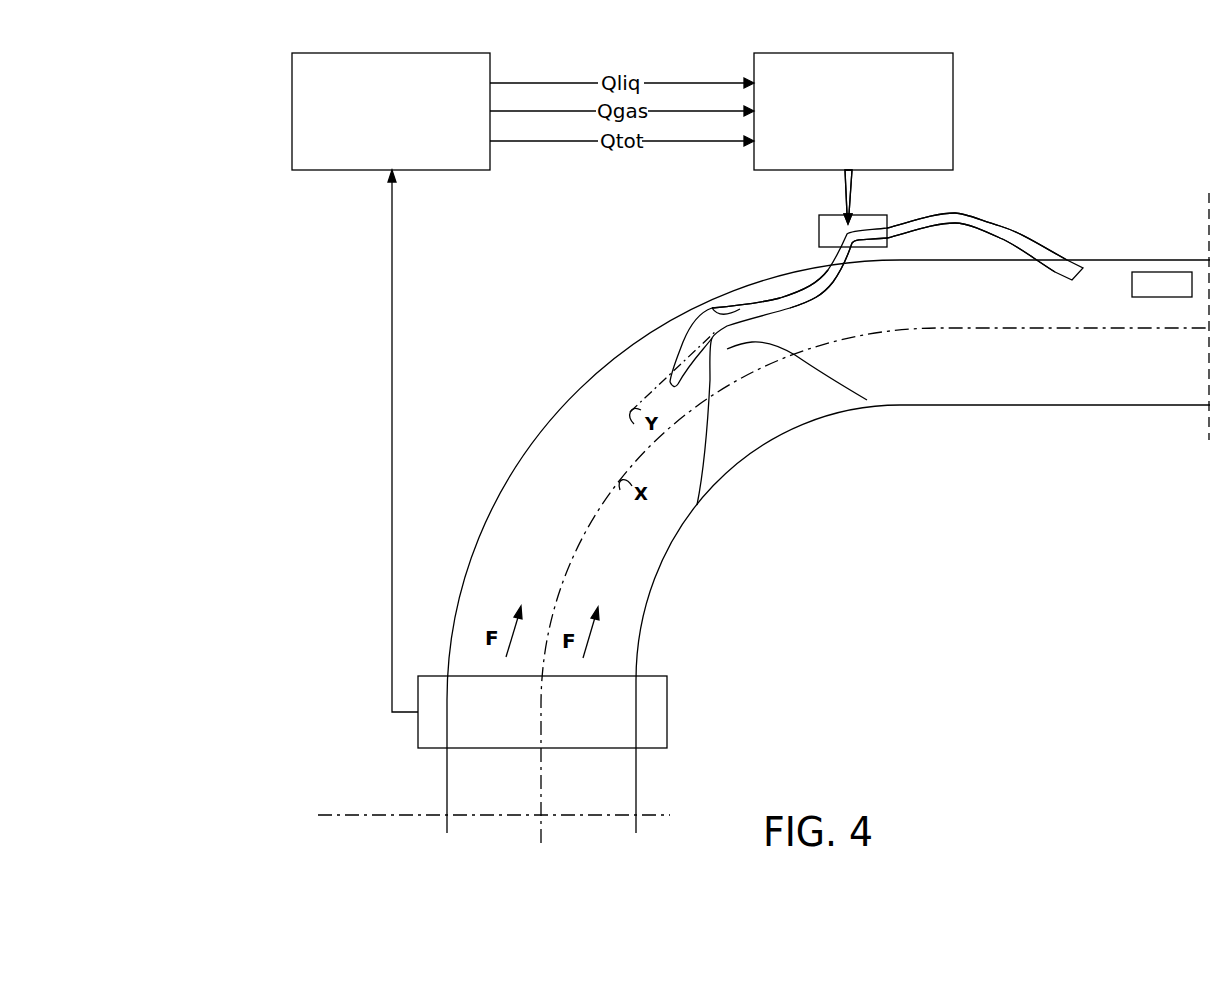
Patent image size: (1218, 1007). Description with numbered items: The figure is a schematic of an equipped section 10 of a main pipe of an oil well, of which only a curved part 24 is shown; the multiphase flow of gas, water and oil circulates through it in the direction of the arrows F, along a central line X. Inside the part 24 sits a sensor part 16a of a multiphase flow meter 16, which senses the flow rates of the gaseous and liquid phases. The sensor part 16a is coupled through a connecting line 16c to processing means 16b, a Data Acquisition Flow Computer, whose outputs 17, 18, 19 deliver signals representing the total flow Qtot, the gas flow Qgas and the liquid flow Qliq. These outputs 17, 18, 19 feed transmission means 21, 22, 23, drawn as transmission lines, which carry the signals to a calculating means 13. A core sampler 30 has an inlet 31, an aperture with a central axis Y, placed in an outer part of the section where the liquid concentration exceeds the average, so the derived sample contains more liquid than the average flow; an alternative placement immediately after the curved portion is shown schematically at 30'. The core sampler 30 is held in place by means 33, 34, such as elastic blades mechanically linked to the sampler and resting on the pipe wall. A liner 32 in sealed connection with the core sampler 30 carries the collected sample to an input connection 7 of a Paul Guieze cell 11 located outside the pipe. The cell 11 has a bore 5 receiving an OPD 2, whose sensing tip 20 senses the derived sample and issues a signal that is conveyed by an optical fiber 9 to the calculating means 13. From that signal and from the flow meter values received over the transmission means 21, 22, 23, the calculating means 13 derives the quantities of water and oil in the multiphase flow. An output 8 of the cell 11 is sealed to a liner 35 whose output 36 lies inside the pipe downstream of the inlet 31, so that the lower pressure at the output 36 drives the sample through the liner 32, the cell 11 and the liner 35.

The OPD 2 is at (862, 202).
The bore 5 is at (838, 215).
The input connection 7 is at (822, 252).
The output 8 is at (892, 236).
The optical fiber 9 is at (842, 181).
The equipped section 10 is at (945, 667).
The Paul Guieze cell 11 is at (866, 249).
The calculating means 13 is at (842, 146).
The multiphase flow meter 16 is at (262, 558).
The sensor part 16a is at (527, 734).
The processing means 16b is at (375, 146).
The connecting line 16c is at (390, 464).
The output 17 is at (530, 141).
The output 18 is at (530, 111).
The output 19 is at (530, 83).
The sensing tip 20 is at (853, 218).
The transmission means 21 is at (652, 141).
The transmission means 22 is at (658, 111).
The transmission means 23 is at (662, 83).
The part of the main pipe 24 is at (650, 593).
The core sampler 30 is at (832, 298).
The core sampler 30' is at (1166, 267).
The inlet 31 is at (672, 372).
The liner 32 is at (805, 293).
The means for maintaining 33 is at (866, 398).
The means for maintaining 34 is at (697, 318).
The liner 35 is at (1018, 232).
The output 36 is at (1080, 265).